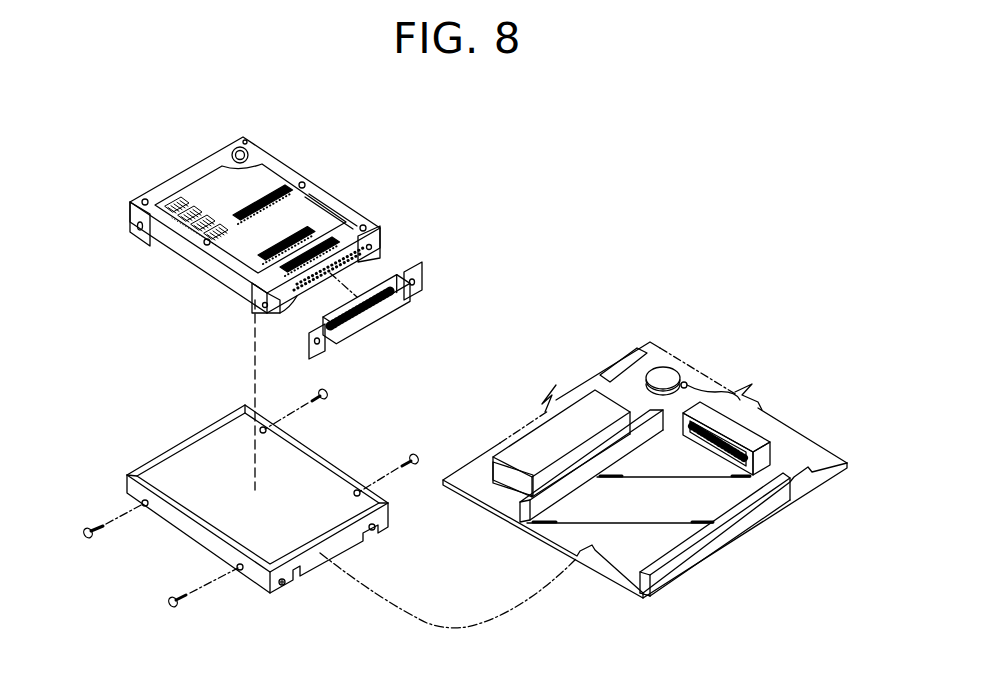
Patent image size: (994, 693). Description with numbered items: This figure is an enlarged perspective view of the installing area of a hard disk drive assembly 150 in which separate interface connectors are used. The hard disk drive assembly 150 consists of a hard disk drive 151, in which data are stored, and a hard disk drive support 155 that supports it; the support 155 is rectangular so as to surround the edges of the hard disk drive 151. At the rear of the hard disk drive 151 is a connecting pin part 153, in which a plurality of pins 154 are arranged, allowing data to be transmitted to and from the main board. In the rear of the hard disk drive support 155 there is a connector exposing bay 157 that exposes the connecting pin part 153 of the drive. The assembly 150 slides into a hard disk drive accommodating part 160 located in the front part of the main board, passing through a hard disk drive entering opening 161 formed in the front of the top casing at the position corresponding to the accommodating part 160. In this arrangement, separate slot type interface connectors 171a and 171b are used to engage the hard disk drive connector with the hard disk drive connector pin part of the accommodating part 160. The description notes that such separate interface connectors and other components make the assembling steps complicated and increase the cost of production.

The hard disk drive assembly 150 is at (108, 290).
The hard disk drive 151 is at (187, 253).
The connecting pin part 153 is at (312, 298).
The pins 154 is at (298, 296).
The hard disk drive support 155 is at (132, 492).
The connector exposing bay 157 is at (283, 585).
The hard disk drive accommodating part 160 is at (669, 508).
The hard disk drive entering opening 161 is at (633, 594).
The slot type interface connector 171a is at (413, 270).
The slot type interface connector 171b is at (750, 437).